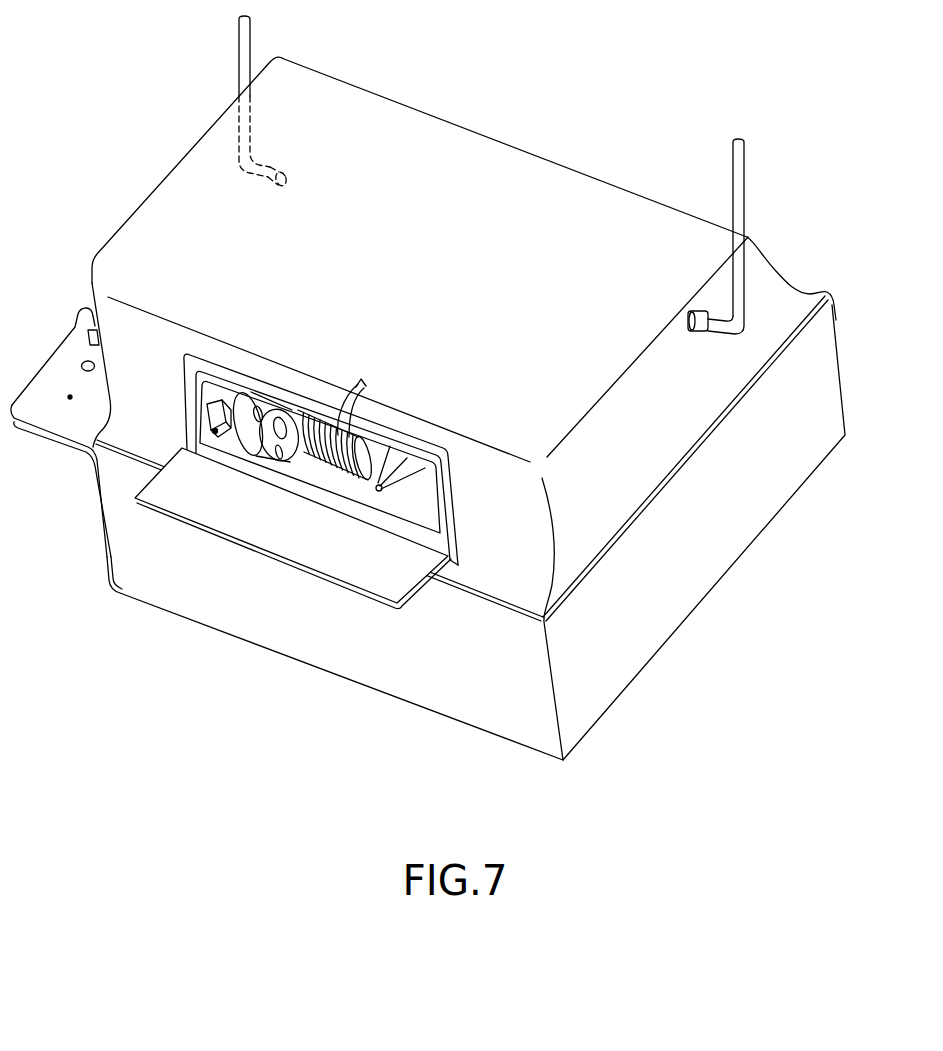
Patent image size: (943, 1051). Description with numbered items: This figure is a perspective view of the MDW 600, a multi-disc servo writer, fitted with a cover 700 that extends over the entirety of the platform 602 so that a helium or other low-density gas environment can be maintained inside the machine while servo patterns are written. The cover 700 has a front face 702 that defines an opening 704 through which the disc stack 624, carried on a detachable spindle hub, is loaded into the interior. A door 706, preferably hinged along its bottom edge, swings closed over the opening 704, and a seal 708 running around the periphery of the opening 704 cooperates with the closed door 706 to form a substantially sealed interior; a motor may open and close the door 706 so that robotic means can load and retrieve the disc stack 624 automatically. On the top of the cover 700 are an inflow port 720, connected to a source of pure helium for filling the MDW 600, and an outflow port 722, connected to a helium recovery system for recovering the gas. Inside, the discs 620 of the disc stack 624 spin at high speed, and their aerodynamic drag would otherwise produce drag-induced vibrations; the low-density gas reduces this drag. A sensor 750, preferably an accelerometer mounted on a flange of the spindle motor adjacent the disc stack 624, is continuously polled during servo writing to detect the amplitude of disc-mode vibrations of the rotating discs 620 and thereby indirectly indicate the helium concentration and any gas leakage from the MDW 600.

The MDW 600 is at (256, 684).
The platform 602 is at (634, 664).
The cover 700 is at (422, 125).
The front face 702 is at (537, 538).
The opening 704 is at (200, 417).
The door 706 is at (395, 573).
The seal 708 is at (440, 497).
The inflow port 720 is at (276, 168).
The outflow port 722 is at (694, 330).
The sensor 750 is at (277, 433).
The disc stack 624 is at (370, 447).
The discs 620 is at (371, 400).